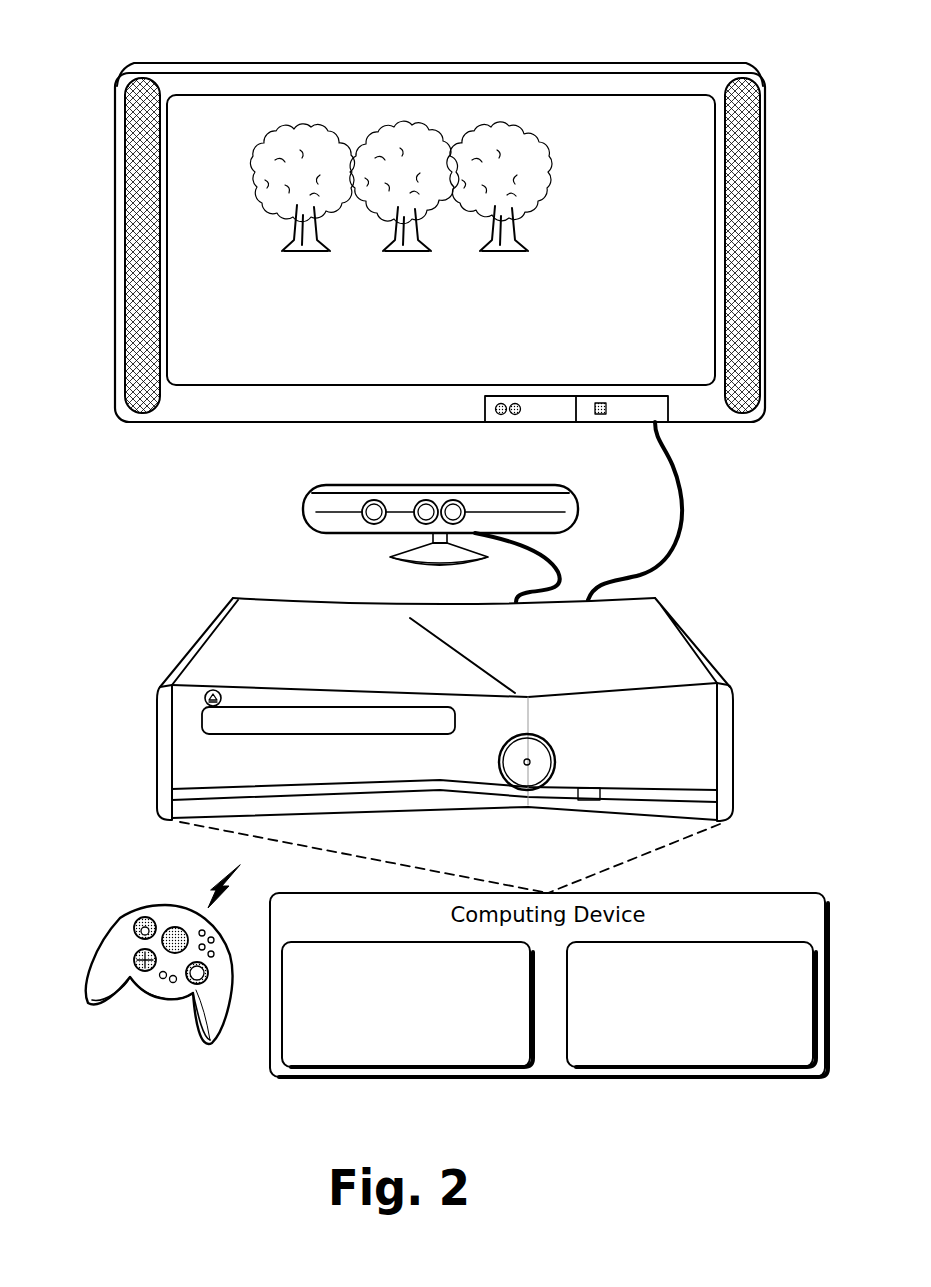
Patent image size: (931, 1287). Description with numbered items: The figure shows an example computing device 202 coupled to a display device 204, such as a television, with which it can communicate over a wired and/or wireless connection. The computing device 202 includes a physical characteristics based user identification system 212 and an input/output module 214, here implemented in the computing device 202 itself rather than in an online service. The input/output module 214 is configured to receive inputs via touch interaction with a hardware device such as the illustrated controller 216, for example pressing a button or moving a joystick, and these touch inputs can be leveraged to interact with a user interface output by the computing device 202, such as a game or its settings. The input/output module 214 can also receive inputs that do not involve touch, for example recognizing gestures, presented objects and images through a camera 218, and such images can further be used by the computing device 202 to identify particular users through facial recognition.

The computing device 202 is at (227, 606).
The display device 204 is at (170, 64).
The physical characteristics based user identification system 212 is at (379, 1068).
The input/output module 214 is at (614, 1068).
The controller 216 is at (120, 930).
The camera 218 is at (370, 486).